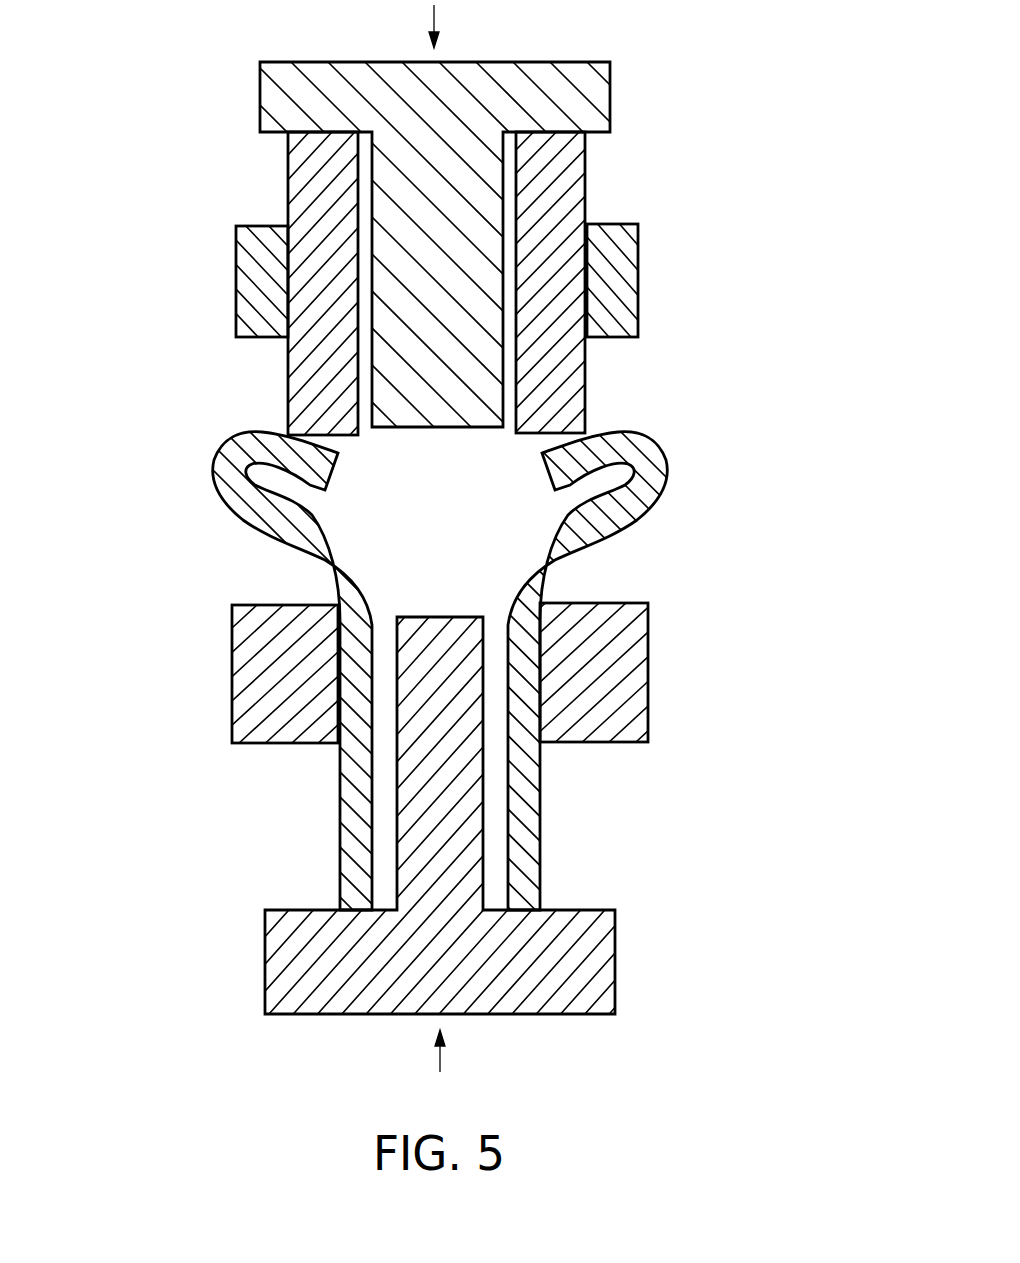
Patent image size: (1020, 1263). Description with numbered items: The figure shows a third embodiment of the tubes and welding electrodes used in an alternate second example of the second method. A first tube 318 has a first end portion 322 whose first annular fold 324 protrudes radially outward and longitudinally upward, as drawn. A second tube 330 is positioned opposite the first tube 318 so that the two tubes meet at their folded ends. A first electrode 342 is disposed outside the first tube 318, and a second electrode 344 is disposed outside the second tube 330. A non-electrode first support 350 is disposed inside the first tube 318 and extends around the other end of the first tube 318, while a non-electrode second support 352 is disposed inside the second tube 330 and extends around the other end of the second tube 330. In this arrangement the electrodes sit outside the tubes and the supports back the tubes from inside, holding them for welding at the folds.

The second support 352 is at (600, 93).
The second tube 330 is at (250, 187).
The second electrode 344 is at (243, 282).
The first end portion 322 is at (205, 462).
The first annular fold 324 is at (667, 460).
The first electrode 342 is at (638, 680).
The first tube 318 is at (565, 830).
The first support 350 is at (265, 963).